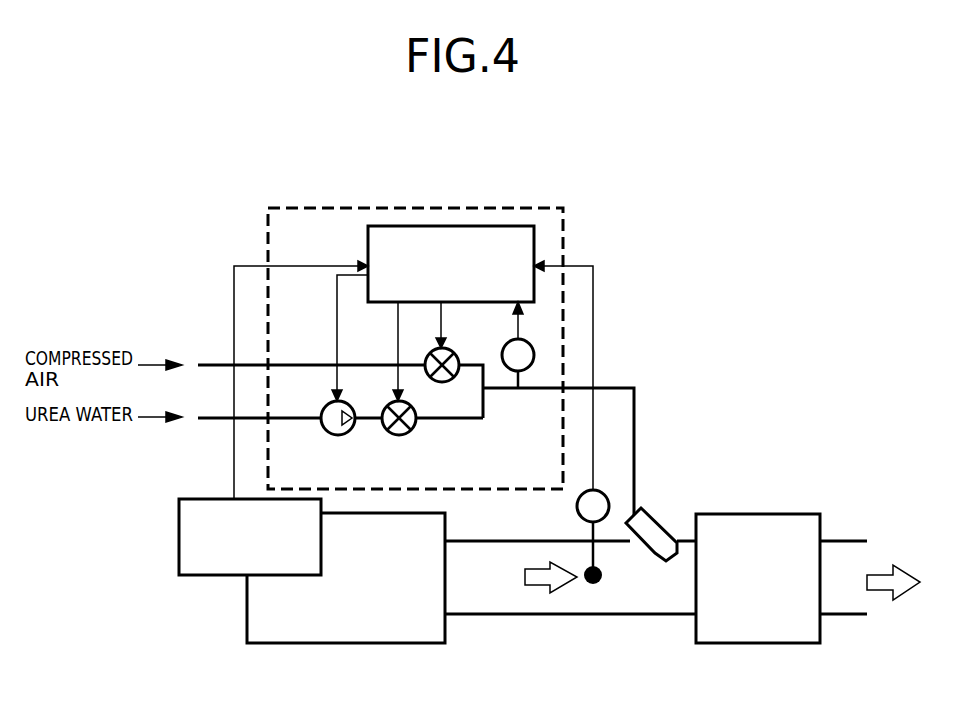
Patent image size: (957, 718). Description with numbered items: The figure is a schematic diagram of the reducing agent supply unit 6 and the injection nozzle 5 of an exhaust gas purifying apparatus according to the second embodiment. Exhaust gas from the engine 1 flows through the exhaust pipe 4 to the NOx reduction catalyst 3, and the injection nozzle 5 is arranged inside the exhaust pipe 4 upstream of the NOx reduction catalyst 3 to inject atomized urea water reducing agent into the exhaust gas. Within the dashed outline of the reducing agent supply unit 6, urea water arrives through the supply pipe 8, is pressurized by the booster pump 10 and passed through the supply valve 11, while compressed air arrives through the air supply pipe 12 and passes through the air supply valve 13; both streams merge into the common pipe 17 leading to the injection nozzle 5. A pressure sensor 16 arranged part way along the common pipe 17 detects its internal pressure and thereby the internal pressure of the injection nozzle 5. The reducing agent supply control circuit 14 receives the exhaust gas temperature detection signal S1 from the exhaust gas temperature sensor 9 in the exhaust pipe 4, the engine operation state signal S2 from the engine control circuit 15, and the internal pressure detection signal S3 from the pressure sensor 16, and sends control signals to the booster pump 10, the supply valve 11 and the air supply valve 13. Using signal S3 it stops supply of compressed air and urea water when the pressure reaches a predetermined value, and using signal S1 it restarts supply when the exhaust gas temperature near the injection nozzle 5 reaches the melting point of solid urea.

The engine 1 is at (247, 620).
The NOx reduction catalyst 3 is at (752, 644).
The exhaust pipe 4 is at (548, 615).
The injection nozzle 5 is at (657, 514).
The reducing agent supply unit 6 is at (527, 208).
The supply pipe 8 is at (200, 420).
The exhaust gas temperature sensor 9 is at (592, 586).
The booster pump 10 is at (343, 433).
The supply valve 11 is at (406, 433).
The air supply pipe 12 is at (212, 365).
The air supply valve 13 is at (430, 352).
The reducing agent supply control circuit 14 is at (368, 239).
The engine control circuit 15 is at (179, 535).
The pressure sensor 16 is at (505, 348).
The common pipe 17 is at (548, 392).
The detection signal of exhaust gas temperature S1 is at (579, 391).
The signal for the operation state of the engine S2 is at (301, 380).
The detection signal of internal pressure of the injection nozzle S3 is at (543, 333).